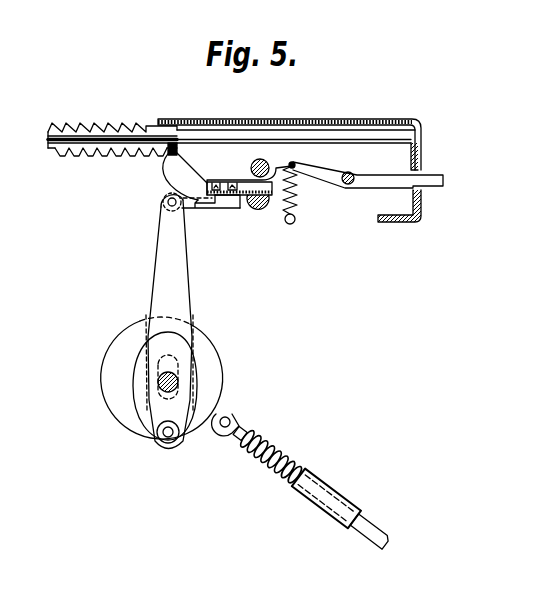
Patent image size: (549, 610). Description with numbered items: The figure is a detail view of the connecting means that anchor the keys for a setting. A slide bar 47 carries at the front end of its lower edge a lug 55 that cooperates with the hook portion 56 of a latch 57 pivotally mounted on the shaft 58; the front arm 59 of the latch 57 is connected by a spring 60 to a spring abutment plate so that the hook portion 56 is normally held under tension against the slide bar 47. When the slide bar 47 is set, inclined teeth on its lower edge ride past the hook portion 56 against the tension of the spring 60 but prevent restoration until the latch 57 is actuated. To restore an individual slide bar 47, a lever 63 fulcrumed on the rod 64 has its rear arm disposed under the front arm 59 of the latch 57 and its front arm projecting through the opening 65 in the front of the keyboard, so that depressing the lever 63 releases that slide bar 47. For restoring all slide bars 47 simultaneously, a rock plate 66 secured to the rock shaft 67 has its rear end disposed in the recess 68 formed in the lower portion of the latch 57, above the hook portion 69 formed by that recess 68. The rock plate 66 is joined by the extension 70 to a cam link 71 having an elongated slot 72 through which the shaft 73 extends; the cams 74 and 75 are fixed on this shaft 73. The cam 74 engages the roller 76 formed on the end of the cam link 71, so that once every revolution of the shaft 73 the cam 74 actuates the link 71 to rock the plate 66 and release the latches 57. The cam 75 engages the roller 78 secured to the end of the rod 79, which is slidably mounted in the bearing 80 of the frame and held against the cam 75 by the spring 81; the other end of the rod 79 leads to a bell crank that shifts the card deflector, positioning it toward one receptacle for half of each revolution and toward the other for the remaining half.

The slide bar 47 is at (70, 133).
The lug 55 is at (177, 142).
The hook portion 56 is at (163, 166).
The latch 57 is at (223, 186).
The shaft 58 is at (264, 162).
The front arm 59 is at (300, 143).
The spring 60 is at (297, 194).
The lever 63 is at (427, 181).
The rod 64 is at (354, 177).
The opening 65 is at (422, 193).
The rock plate 66 is at (238, 182).
The rock shaft 67 is at (268, 214).
The recess 68 is at (213, 181).
The hook portion 69 is at (193, 211).
The extension 70 is at (232, 208).
The cam link 71 is at (165, 216).
The elongated slot 72 is at (170, 360).
The shaft 73 is at (178, 382).
The cam 74 is at (137, 385).
The cam 75 is at (207, 346).
The roller 76 is at (168, 446).
The roller 78 is at (233, 415).
The rod 79 is at (361, 523).
The bearing 80 is at (321, 488).
The spring 81 is at (281, 452).